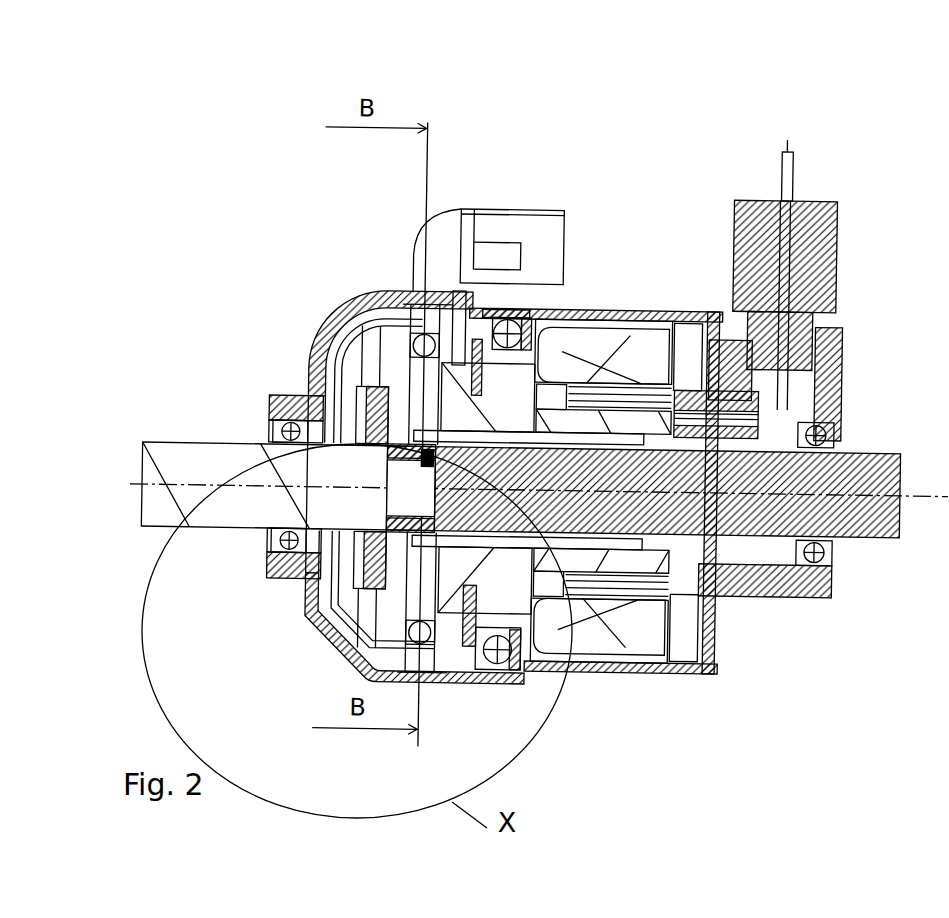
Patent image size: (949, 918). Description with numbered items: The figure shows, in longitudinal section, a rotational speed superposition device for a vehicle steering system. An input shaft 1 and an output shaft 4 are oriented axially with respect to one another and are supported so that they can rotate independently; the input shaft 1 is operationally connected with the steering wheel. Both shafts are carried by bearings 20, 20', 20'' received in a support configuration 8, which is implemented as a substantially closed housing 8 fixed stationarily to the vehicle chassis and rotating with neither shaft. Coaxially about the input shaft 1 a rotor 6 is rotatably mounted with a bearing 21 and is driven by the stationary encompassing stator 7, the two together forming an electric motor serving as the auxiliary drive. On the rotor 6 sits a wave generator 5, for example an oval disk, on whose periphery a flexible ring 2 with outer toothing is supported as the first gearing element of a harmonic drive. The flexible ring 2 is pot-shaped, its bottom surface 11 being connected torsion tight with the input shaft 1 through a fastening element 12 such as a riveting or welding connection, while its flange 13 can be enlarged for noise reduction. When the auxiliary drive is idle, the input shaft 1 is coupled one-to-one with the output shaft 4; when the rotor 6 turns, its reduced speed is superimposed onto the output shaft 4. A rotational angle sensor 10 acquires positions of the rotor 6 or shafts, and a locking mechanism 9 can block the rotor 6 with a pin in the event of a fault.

The input shaft 1 is at (865, 520).
The flexible ring 2 is at (425, 655).
The output shaft 4 is at (223, 510).
The wave generator 5 is at (441, 647).
The rotor 6 is at (607, 557).
The stator 7 is at (595, 343).
The support configuration 8 is at (785, 583).
The locking mechanism 9 is at (793, 355).
The rotational angle sensor 10 is at (447, 253).
The bottom surface 11 is at (368, 360).
The fastening element 12 is at (318, 362).
The flange 13 is at (387, 333).
The bearing 20 is at (848, 292).
The bearing 20' is at (249, 373).
The bearing 20'' is at (286, 631).
The bearing 21 is at (447, 457).